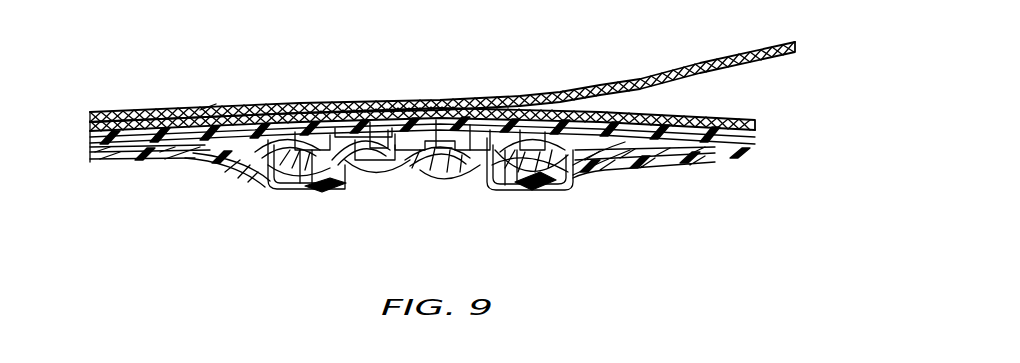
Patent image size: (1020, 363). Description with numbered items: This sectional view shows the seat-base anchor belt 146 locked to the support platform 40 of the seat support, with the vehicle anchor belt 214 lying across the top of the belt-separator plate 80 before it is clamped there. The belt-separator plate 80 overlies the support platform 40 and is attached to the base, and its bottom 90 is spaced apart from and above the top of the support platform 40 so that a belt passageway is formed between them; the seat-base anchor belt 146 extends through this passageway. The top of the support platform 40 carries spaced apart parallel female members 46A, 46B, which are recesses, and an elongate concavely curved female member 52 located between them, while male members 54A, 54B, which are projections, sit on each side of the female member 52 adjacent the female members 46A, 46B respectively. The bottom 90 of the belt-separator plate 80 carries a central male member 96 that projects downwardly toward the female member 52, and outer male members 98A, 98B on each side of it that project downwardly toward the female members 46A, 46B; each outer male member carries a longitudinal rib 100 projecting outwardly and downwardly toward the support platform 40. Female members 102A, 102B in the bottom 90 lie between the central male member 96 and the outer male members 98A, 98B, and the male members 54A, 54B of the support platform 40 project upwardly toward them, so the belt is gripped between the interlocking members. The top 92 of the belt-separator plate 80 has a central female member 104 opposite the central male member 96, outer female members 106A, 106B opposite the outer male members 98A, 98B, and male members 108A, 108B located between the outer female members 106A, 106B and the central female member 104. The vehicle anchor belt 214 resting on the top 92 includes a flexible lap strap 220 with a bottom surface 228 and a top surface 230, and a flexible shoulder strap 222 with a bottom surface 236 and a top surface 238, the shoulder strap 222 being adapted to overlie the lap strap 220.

The support platform 40 is at (123, 160).
The female member 46A is at (308, 190).
The female member 46B is at (548, 193).
The female member 52 is at (445, 170).
The male member 54A is at (357, 167).
The male member 54B is at (487, 158).
The belt-separator plate 80 is at (135, 137).
The bottom 90 is at (166, 148).
The top 92 is at (166, 128).
The central male member 96 is at (410, 172).
The outer male member 98A is at (253, 195).
The outer male member 98B is at (545, 185).
The longitudinal rib 100 is at (322, 177).
The female member 102A is at (378, 150).
The female member 102B is at (477, 130).
The central female member 104 is at (414, 140).
The outer female member 106A is at (300, 165).
The outer female member 106B is at (528, 165).
The male member 108A is at (378, 108).
The male member 108B is at (442, 105).
The seat-base anchor belt 146 is at (700, 143).
The vehicle anchor belt 214 is at (209, 103).
The lap strap 220 is at (735, 125).
The shoulder strap 222 is at (690, 70).
The bottom surface 228 is at (743, 138).
The top surface 230 is at (670, 120).
The bottom surface 236 is at (755, 63).
The top surface 238 is at (752, 50).